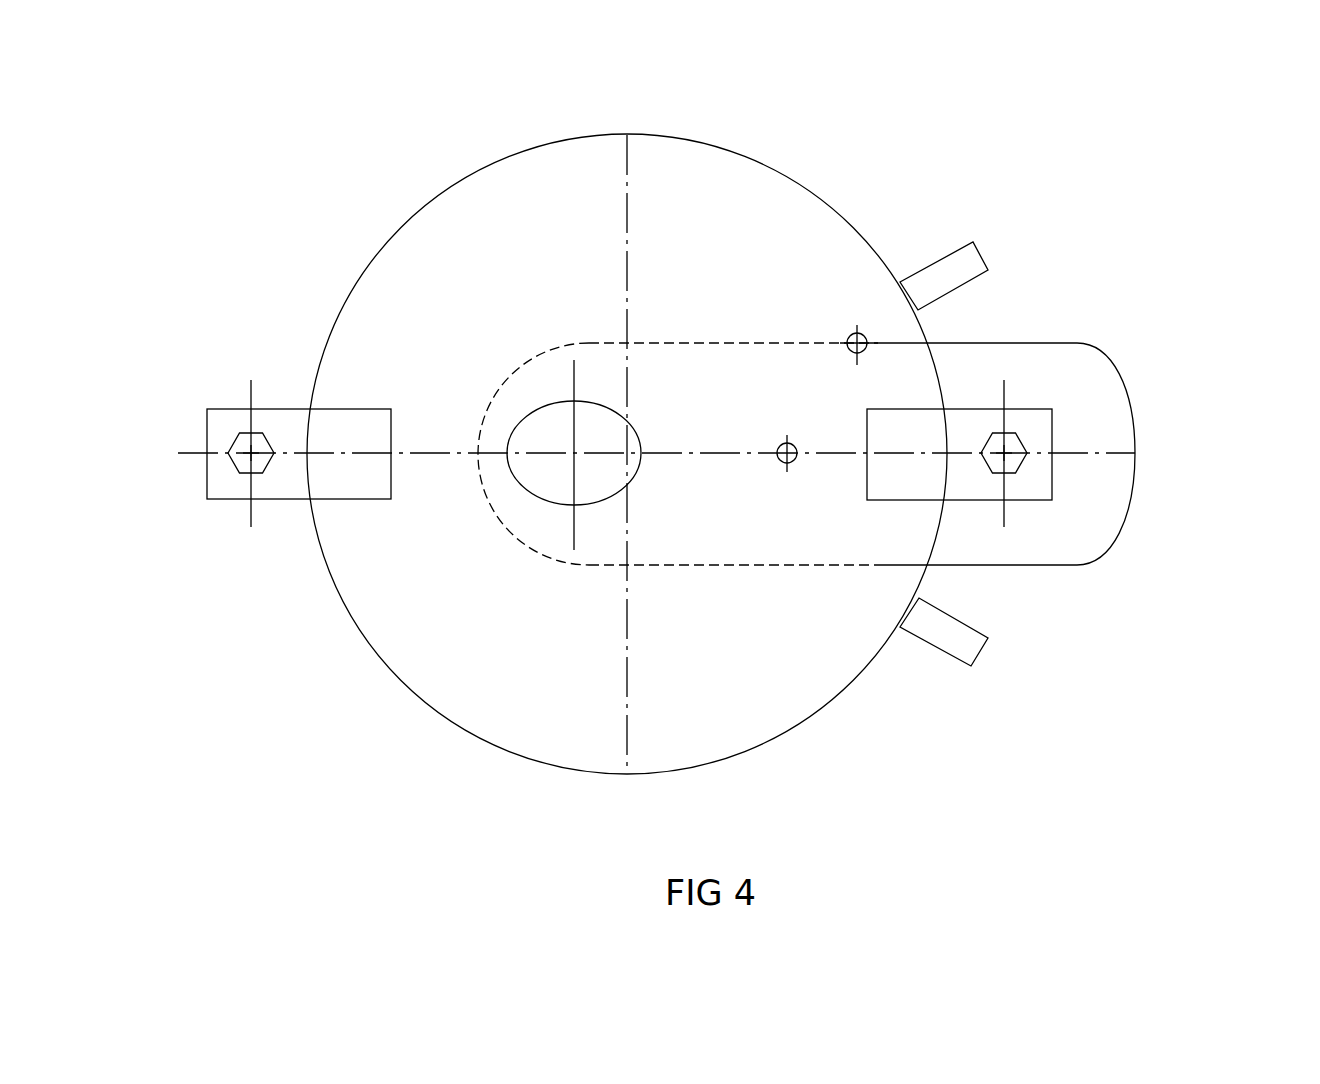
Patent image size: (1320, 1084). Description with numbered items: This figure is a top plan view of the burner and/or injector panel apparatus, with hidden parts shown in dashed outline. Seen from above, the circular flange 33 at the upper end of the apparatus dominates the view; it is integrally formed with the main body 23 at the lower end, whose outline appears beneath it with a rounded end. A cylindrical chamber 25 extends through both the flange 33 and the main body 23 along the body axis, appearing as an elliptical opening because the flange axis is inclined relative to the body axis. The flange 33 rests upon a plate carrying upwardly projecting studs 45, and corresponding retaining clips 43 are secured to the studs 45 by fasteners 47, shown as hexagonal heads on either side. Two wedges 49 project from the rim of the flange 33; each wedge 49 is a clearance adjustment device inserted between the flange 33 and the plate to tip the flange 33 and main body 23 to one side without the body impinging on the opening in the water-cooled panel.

The main body 23 is at (1118, 360).
The cylindrical chamber 25 is at (545, 500).
The flange 33 is at (815, 257).
The retaining clip 43 is at (1052, 425).
The stud 45 is at (207, 407).
The fastener 47 is at (245, 475).
The wedge 49 is at (983, 267).